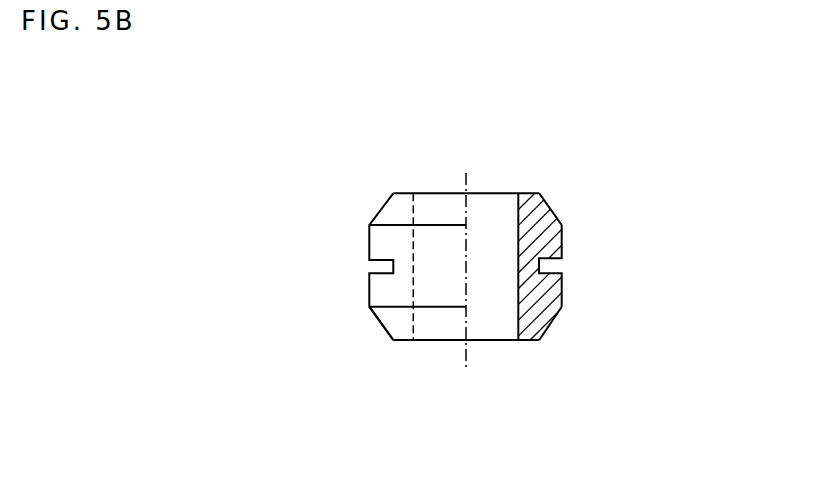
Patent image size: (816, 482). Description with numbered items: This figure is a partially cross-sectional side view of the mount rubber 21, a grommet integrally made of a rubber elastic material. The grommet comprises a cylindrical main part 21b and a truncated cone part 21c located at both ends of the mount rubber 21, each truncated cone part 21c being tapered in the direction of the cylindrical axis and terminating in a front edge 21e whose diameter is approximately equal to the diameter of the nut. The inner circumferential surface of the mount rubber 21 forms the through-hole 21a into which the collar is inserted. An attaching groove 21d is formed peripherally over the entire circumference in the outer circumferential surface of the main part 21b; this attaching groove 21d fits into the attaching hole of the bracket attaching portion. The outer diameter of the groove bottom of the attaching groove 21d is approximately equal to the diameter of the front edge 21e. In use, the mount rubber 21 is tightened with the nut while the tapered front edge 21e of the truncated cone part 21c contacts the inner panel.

The mount rubber 21 is at (353, 162).
The through-hole 21a is at (517, 215).
The cylindrical main part 21b is at (563, 290).
The truncated cone part 21c is at (550, 207).
The attaching groove 21d is at (542, 262).
The front edge 21e is at (526, 192).